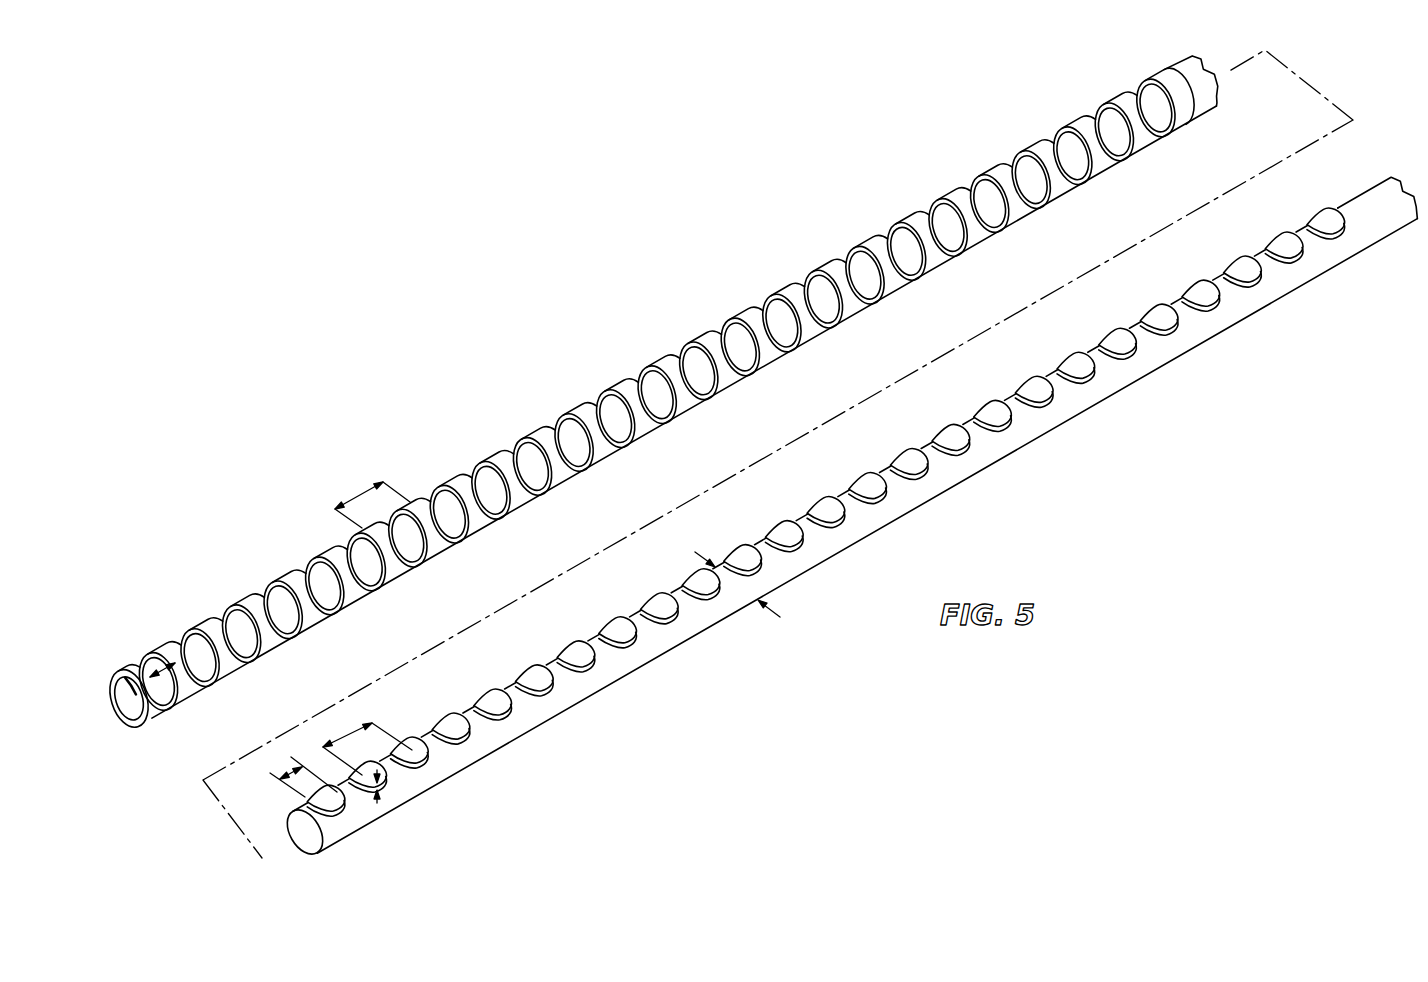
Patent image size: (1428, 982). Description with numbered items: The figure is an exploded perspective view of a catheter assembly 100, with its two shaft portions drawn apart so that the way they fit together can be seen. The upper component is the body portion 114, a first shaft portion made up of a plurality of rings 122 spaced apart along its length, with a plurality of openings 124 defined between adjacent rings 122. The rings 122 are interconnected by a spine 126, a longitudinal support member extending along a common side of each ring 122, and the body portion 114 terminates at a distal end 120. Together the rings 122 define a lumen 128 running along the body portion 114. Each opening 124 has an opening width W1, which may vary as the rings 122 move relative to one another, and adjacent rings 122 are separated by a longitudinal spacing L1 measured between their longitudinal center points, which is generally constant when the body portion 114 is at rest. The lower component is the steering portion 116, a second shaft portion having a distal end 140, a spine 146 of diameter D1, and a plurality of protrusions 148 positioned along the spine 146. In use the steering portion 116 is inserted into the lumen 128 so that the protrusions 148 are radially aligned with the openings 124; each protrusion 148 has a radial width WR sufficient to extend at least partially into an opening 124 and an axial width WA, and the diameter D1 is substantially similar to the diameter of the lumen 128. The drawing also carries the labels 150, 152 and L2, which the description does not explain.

The catheter assembly 100 is at (603, 757).
The body portion 114 is at (447, 475).
The steering portion 116 is at (605, 687).
The distal end 120 is at (155, 703).
The rings 122 is at (330, 547).
The openings 124 is at (532, 442).
The spine 126 is at (460, 538).
The lumen 128 is at (118, 692).
The distal end 140 is at (337, 832).
The spine 146 is at (673, 652).
The protrusions 148 is at (440, 752).
The outer surface of coil 150 is at (283, 652).
The coil turn 152 is at (256, 603).
The opening width W1 is at (178, 702).
The longitudinal spacing L1 is at (363, 498).
The diameter of the spine D1 is at (750, 596).
The radial width WR is at (379, 797).
The axial width WA is at (297, 774).
The spacing of projections L2 is at (367, 749).